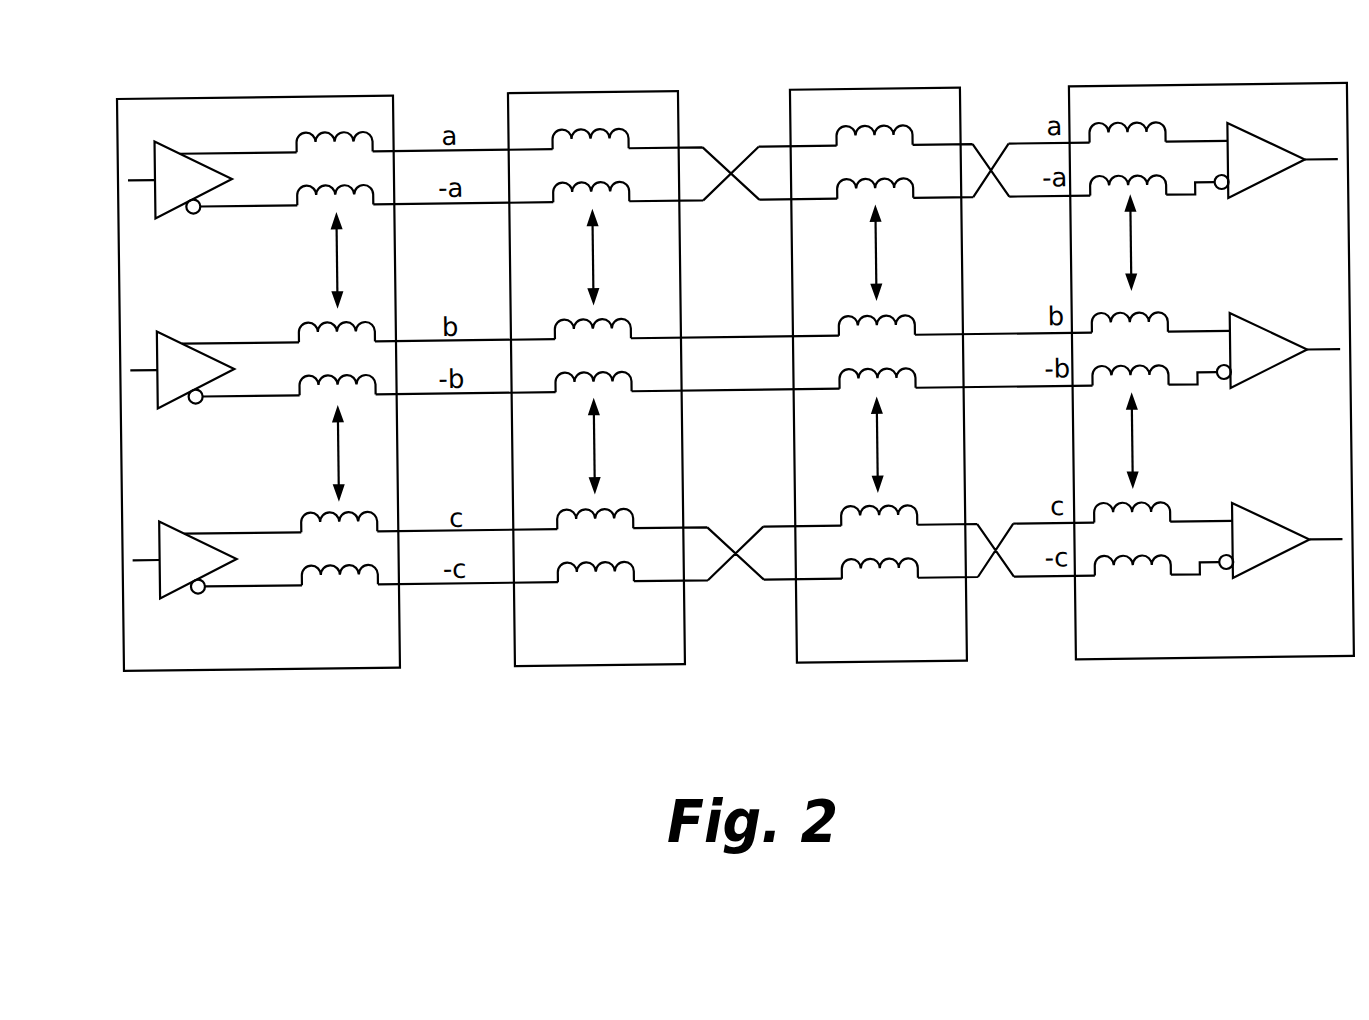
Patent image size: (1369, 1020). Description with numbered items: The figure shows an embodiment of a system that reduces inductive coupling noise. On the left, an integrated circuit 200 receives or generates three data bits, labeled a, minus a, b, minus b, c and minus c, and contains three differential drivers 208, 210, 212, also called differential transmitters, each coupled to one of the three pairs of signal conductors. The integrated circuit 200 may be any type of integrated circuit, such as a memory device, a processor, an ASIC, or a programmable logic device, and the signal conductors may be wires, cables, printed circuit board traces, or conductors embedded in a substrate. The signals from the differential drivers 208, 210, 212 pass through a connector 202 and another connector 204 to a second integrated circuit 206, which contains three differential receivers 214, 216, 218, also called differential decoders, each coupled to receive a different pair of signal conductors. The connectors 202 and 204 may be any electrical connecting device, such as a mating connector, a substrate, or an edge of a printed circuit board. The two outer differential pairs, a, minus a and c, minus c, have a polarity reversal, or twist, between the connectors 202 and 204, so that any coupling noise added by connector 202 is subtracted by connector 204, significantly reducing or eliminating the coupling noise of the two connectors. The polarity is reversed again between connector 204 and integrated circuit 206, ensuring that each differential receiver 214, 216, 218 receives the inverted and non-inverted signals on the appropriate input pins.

The integrated circuit 200 is at (130, 99).
The connector 202 is at (517, 98).
The connector 204 is at (800, 96).
The integrated circuit 206 is at (1082, 97).
The differential driver 208 is at (166, 213).
The differential driver 210 is at (164, 404).
The differential driver 212 is at (162, 594).
The differential receiver 214 is at (1237, 206).
The differential receiver 216 is at (1236, 396).
The differential receiver 218 is at (1234, 586).